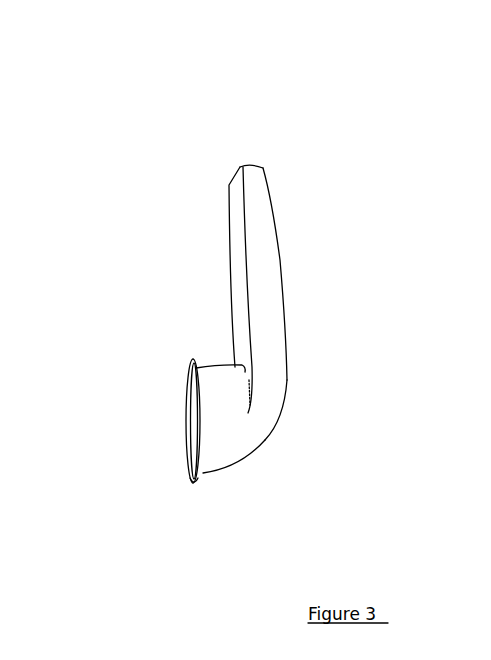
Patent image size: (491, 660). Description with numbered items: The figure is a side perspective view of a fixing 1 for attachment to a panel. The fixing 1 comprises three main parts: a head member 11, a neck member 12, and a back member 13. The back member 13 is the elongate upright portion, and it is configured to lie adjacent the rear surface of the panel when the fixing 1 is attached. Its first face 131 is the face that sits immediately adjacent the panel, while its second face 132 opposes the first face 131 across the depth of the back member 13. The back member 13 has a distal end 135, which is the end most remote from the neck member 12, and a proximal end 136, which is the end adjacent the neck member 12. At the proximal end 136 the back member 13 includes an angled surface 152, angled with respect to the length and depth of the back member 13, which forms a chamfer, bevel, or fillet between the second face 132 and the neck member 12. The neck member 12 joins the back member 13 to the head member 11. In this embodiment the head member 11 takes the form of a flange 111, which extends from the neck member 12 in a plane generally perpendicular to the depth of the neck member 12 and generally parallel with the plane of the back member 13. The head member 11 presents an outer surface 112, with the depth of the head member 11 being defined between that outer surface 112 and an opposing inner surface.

The fixing 1 is at (116, 108).
The head member 11 is at (187, 447).
The flange 111 is at (197, 485).
The outer surface 112 is at (187, 393).
The neck member 12 is at (218, 380).
The back member 13 is at (263, 177).
The first face 131 is at (235, 238).
The second face 132 is at (276, 223).
The distal end 135 is at (241, 135).
The proximal end 136 is at (302, 417).
The angled surface 152 is at (245, 462).